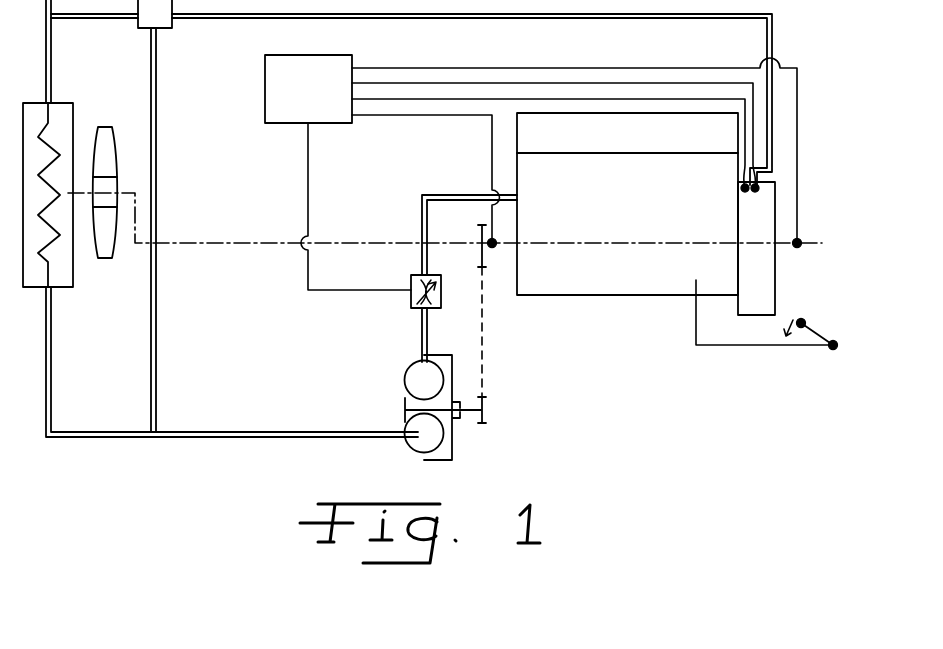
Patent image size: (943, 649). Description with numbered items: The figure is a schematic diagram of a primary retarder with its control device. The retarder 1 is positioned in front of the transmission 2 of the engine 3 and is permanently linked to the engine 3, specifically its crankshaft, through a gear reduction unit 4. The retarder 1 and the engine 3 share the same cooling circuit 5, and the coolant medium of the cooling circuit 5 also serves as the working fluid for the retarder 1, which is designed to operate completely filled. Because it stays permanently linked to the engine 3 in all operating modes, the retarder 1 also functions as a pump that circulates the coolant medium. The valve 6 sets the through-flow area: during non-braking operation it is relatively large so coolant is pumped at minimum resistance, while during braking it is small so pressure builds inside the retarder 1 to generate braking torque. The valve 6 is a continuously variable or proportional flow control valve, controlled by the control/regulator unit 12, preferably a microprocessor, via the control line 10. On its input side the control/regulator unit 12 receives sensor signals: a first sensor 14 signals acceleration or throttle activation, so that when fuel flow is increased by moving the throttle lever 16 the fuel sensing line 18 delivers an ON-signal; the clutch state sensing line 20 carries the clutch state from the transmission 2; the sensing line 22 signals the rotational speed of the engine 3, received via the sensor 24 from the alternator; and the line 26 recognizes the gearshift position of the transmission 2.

The retarder 1 is at (410, 446).
The transmission 2 is at (762, 265).
The engine 3 is at (603, 295).
The gear reduction unit 4 is at (482, 354).
The cooling circuit 5 is at (158, 352).
The valve 6 is at (411, 310).
The control line 10 is at (306, 263).
The control/regulator unit 12 is at (265, 94).
The first sensor 14 is at (800, 248).
The throttle lever 16 is at (812, 323).
The fuel sensing line 18 is at (418, 66).
The clutch state sensing line 20 is at (447, 83).
The sensing line 22 is at (400, 117).
The sensor 24 is at (494, 247).
The line 26 is at (430, 100).